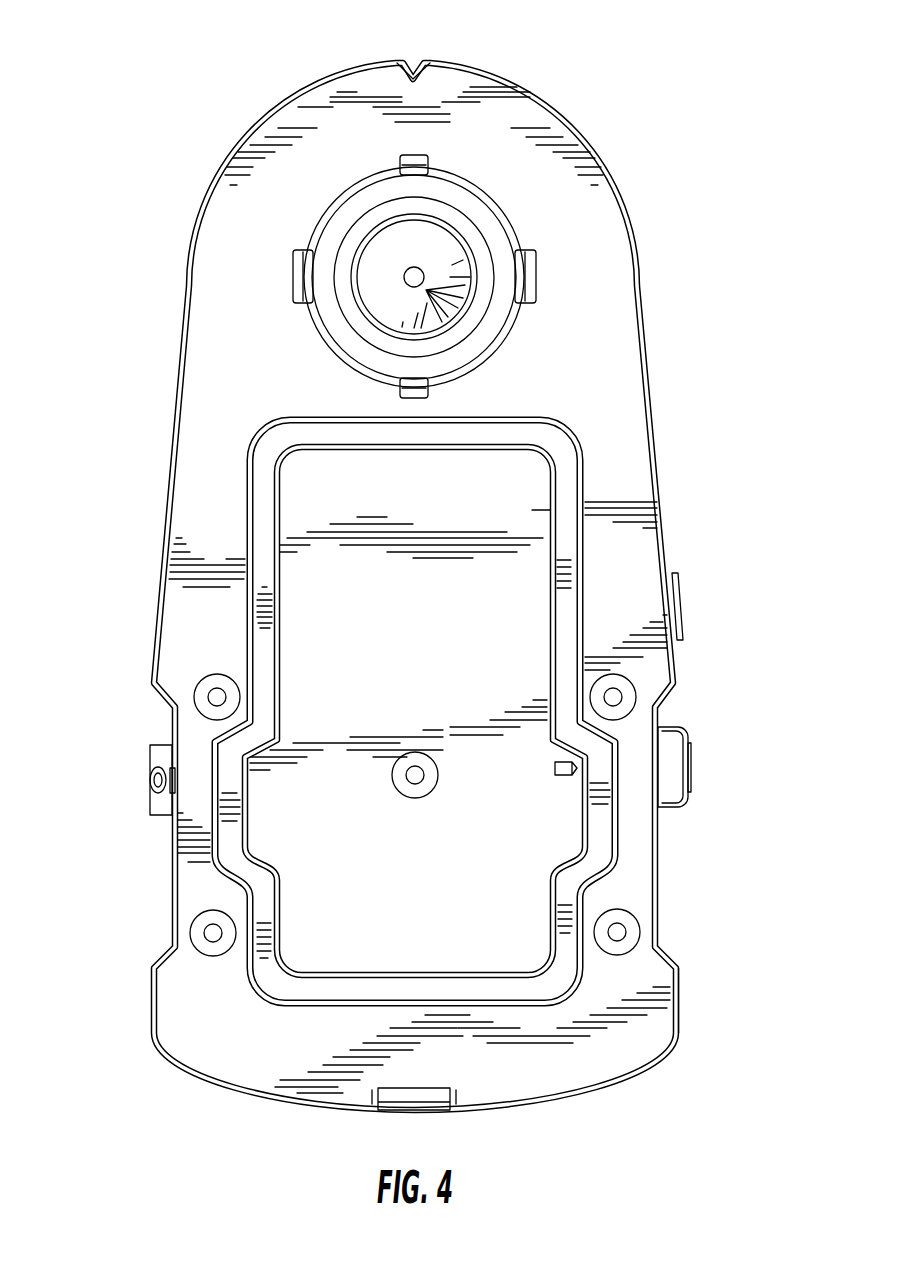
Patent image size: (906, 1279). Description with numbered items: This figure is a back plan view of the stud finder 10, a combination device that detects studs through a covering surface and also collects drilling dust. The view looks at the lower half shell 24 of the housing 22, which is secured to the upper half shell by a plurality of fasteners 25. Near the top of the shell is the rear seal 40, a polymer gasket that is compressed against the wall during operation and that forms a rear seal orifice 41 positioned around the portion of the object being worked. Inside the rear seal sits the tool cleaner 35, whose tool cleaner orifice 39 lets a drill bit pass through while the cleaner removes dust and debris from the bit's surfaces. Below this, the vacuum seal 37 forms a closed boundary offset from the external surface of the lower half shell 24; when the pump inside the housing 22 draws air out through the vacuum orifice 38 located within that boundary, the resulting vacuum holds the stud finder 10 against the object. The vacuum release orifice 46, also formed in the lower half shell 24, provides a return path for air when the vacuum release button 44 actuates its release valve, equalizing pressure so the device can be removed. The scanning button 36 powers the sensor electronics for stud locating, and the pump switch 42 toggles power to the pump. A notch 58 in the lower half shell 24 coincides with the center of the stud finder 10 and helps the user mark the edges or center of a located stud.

The stud finder 10 is at (136, 118).
The housing 22 is at (683, 1028).
The lower half shell 24 is at (681, 977).
The fasteners 25 is at (197, 693).
The tool cleaner 35 is at (382, 298).
The scanning button 36 is at (684, 595).
The vacuum seal 37 is at (583, 491).
The vacuum orifice 38 is at (420, 784).
The tool cleaner orifice 39 is at (412, 267).
The rear seal 40 is at (495, 233).
The rear seal orifice 41 is at (463, 317).
The pump switch 42 is at (150, 802).
The vacuum release button 44 is at (692, 777).
The vacuum release orifice 46 is at (578, 768).
The notch 58 is at (408, 72).